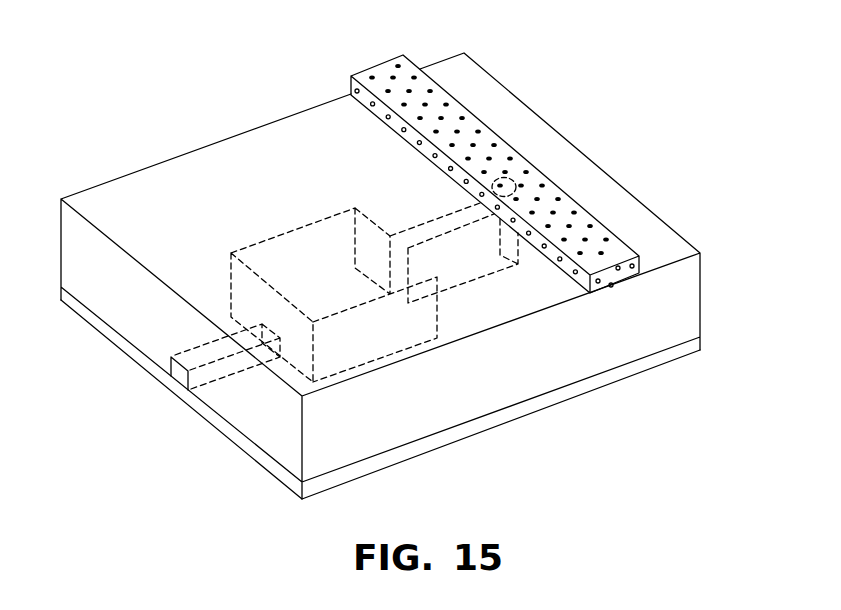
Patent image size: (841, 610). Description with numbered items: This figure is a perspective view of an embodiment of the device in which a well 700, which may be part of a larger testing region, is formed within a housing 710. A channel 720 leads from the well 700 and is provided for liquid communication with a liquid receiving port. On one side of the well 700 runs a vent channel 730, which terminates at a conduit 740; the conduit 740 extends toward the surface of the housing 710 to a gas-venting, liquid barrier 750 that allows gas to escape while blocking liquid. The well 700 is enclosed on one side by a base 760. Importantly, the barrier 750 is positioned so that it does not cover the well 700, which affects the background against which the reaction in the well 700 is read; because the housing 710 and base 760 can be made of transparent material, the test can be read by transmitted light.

The well 700 is at (297, 246).
The housing 710 is at (137, 190).
The channel 720 is at (220, 368).
The vent channel 730 is at (177, 375).
The conduit 740 is at (517, 196).
The gas-venting, liquid barrier 750 is at (590, 223).
The base 760 is at (522, 416).